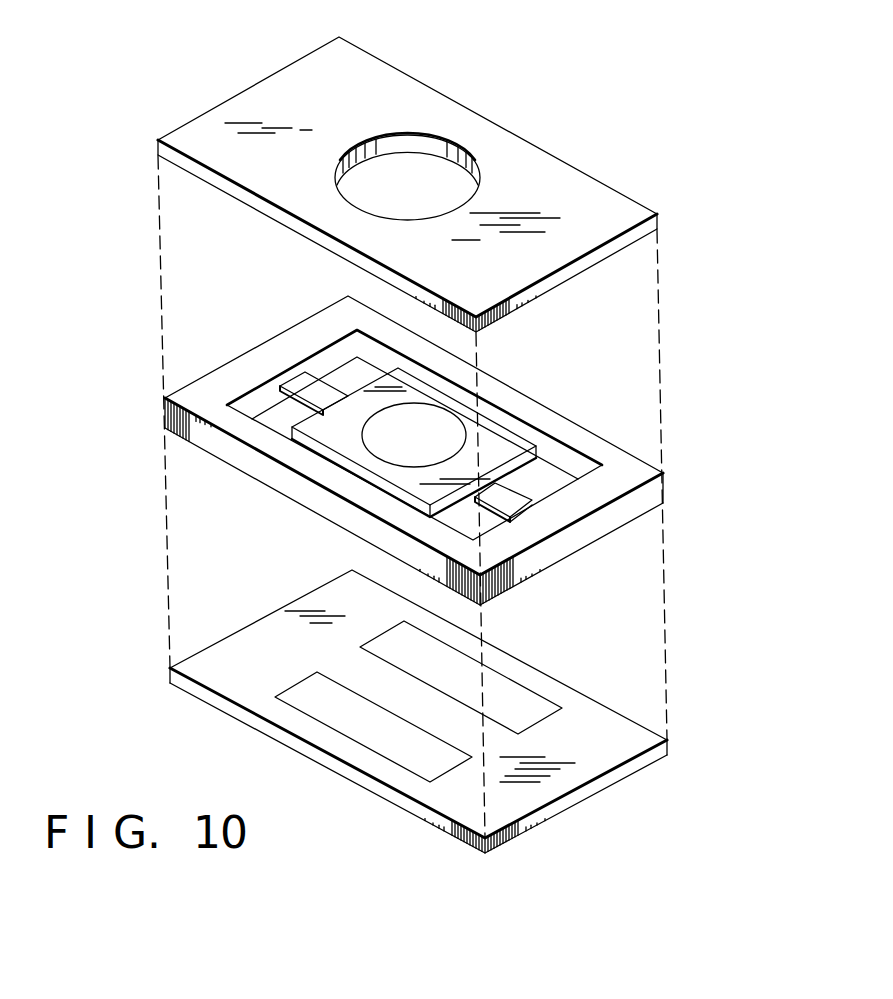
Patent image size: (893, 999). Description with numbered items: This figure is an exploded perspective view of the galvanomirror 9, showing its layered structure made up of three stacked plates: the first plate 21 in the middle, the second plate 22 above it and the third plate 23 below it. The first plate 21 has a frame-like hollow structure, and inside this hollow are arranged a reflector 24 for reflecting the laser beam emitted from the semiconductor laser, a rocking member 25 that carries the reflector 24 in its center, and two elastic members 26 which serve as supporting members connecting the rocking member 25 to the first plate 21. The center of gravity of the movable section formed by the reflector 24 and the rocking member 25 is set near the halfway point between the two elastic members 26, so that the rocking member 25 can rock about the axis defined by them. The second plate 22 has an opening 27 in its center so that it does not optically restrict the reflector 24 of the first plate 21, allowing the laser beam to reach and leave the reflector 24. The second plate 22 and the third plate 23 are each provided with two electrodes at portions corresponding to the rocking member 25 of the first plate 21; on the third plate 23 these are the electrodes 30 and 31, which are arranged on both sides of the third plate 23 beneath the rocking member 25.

The galvanomirror 9 is at (577, 153).
The first plate 21 is at (680, 492).
The second plate 22 is at (676, 221).
The third plate 23 is at (687, 742).
The reflector 24 is at (445, 430).
The rocking member 25 is at (337, 440).
The elastic members 26 is at (301, 384).
The opening 27 is at (368, 172).
The electrode 30 is at (305, 692).
The electrode 31 is at (528, 717).